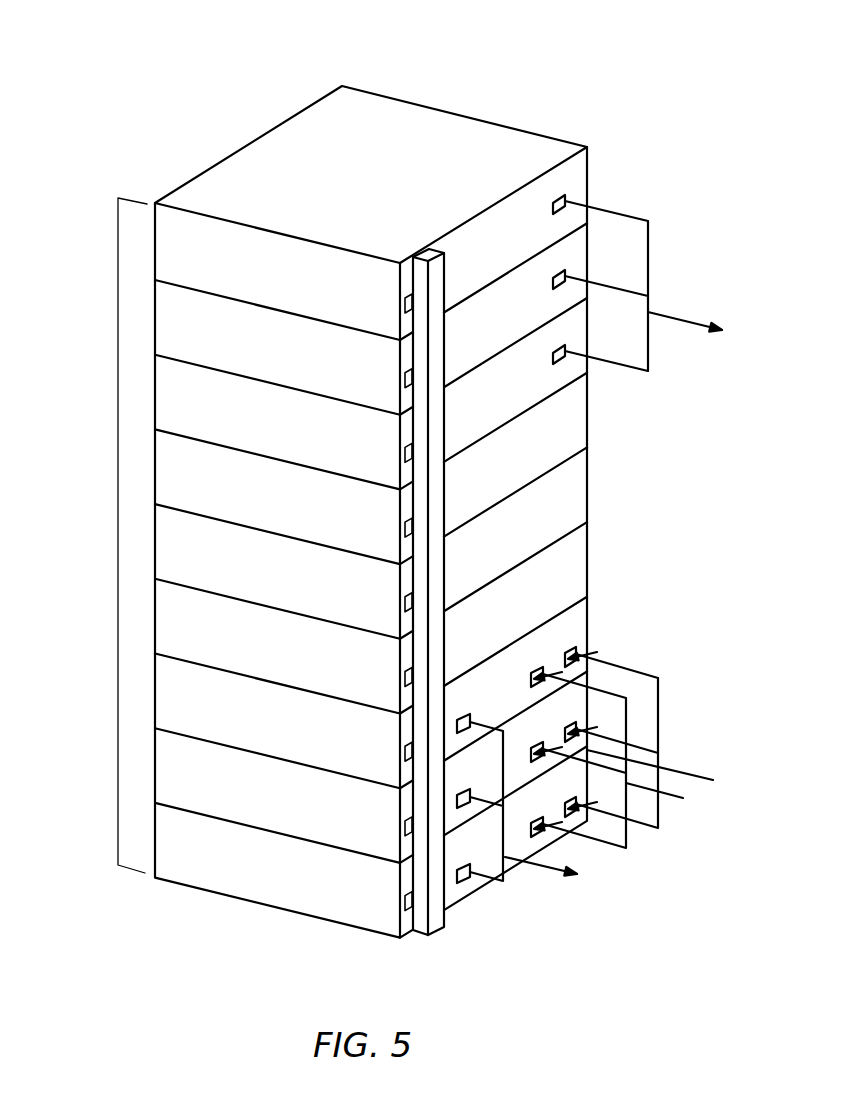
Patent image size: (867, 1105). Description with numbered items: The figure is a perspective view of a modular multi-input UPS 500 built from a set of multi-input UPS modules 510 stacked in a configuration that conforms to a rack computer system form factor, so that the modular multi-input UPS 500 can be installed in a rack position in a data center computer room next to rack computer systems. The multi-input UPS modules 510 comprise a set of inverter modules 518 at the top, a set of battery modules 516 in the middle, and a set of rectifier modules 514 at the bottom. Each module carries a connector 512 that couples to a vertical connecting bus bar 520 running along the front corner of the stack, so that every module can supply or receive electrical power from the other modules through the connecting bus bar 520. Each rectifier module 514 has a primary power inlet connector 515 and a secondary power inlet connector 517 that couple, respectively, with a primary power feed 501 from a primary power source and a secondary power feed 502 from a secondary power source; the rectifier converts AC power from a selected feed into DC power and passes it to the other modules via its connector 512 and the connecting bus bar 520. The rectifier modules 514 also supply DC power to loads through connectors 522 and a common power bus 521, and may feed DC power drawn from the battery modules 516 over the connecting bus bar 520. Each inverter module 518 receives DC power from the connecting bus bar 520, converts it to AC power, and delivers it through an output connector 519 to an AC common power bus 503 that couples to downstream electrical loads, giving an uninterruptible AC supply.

The modular multi-input UPS 500 is at (212, 87).
The multi-input UPS modules 510 is at (118, 515).
The connector 512 is at (438, 799).
The rectifier modules 514 is at (277, 782).
The battery modules 516 is at (277, 592).
The inverter modules 518 is at (277, 368).
The output connector 519 is at (535, 208).
The AC common power bus 503 is at (677, 323).
The primary power inlet connector 515 is at (533, 663).
The secondary power inlet connector 517 is at (588, 655).
The connectors 522 is at (460, 714).
The secondary power feed 502 is at (712, 766).
The primary power feed 501 is at (678, 782).
The common power bus 521 is at (530, 862).
The connecting bus bar 520 is at (433, 923).